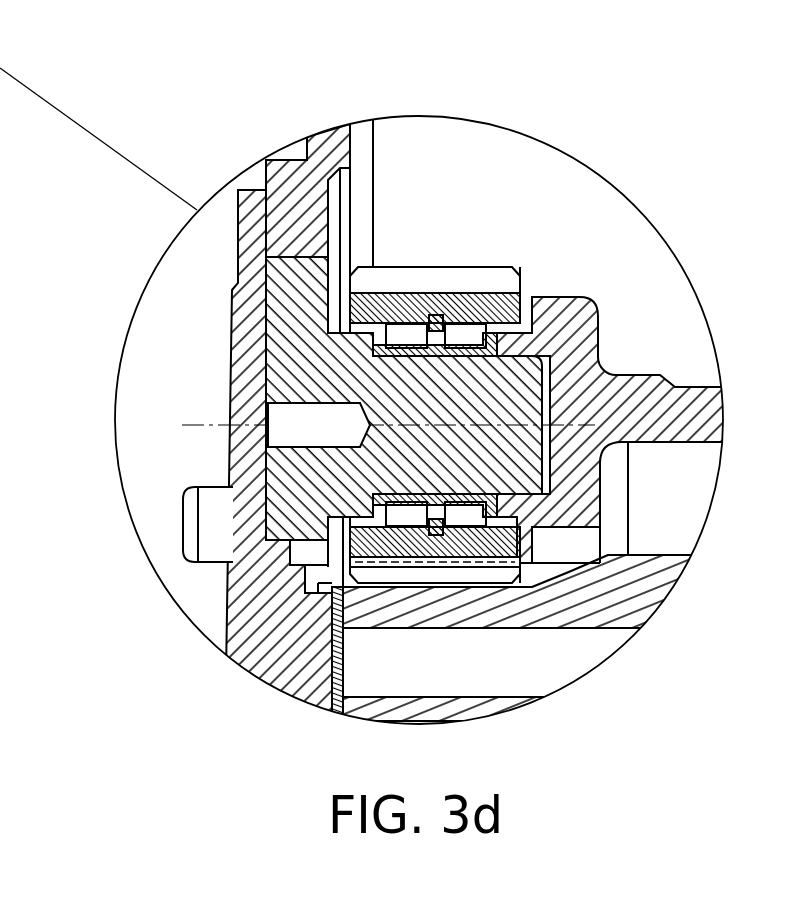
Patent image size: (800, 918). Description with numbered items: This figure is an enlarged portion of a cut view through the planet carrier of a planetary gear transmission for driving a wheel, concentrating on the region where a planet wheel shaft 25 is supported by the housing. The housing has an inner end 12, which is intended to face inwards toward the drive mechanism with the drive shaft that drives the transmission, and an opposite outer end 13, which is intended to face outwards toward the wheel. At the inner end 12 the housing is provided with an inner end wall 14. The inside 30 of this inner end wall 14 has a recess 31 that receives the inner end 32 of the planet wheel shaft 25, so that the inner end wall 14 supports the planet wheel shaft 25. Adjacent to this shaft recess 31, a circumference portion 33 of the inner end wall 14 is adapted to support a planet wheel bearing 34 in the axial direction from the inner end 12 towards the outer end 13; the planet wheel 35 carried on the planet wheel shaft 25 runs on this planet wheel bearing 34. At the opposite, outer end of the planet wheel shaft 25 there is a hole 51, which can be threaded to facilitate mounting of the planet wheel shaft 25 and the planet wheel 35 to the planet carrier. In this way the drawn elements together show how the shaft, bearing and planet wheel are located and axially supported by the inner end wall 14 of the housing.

The inner end 12 is at (562, 317).
The outer end 13 is at (190, 153).
The inner end wall 14 is at (558, 320).
The planet wheel shaft 25 is at (605, 335).
The inside 30 is at (522, 313).
The recess 31 is at (502, 403).
The inner end 32 is at (522, 473).
The circumference portion 33 is at (503, 330).
The planet wheel bearing 34 is at (465, 333).
The planet wheel 35 is at (418, 278).
The hole 51 is at (287, 415).